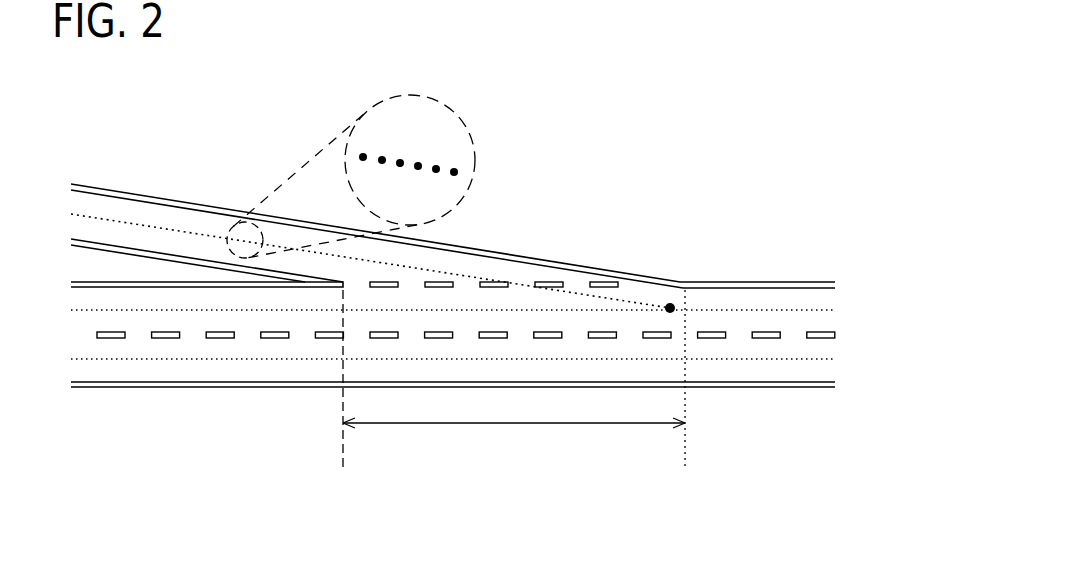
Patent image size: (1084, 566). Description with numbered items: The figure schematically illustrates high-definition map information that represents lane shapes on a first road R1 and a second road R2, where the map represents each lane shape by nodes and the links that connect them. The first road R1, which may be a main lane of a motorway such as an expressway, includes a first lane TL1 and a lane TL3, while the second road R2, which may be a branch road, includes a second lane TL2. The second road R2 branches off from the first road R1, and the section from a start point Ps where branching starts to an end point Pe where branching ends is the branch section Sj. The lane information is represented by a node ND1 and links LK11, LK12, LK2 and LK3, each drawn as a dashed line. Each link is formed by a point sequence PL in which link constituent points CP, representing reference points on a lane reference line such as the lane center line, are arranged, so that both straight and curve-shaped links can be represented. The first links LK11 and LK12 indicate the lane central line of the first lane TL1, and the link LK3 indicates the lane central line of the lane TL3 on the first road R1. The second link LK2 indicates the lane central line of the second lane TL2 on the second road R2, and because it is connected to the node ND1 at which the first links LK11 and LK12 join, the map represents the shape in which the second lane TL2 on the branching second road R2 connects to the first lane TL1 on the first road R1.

The first road R1 is at (233, 398).
The second road R2 is at (207, 195).
The first lane TL1 is at (140, 322).
The second lane TL2 is at (102, 210).
The lane TL3 is at (190, 370).
The first link LK12 is at (305, 320).
The first link LK11 is at (745, 312).
The second link LK2 is at (470, 278).
The link LK3 is at (808, 360).
The link constituent point CP is at (381, 155).
The point sequence PL is at (420, 150).
The node ND1 is at (671, 302).
The end point Pe is at (345, 396).
The start point Ps is at (687, 396).
The branch section Sj is at (514, 439).